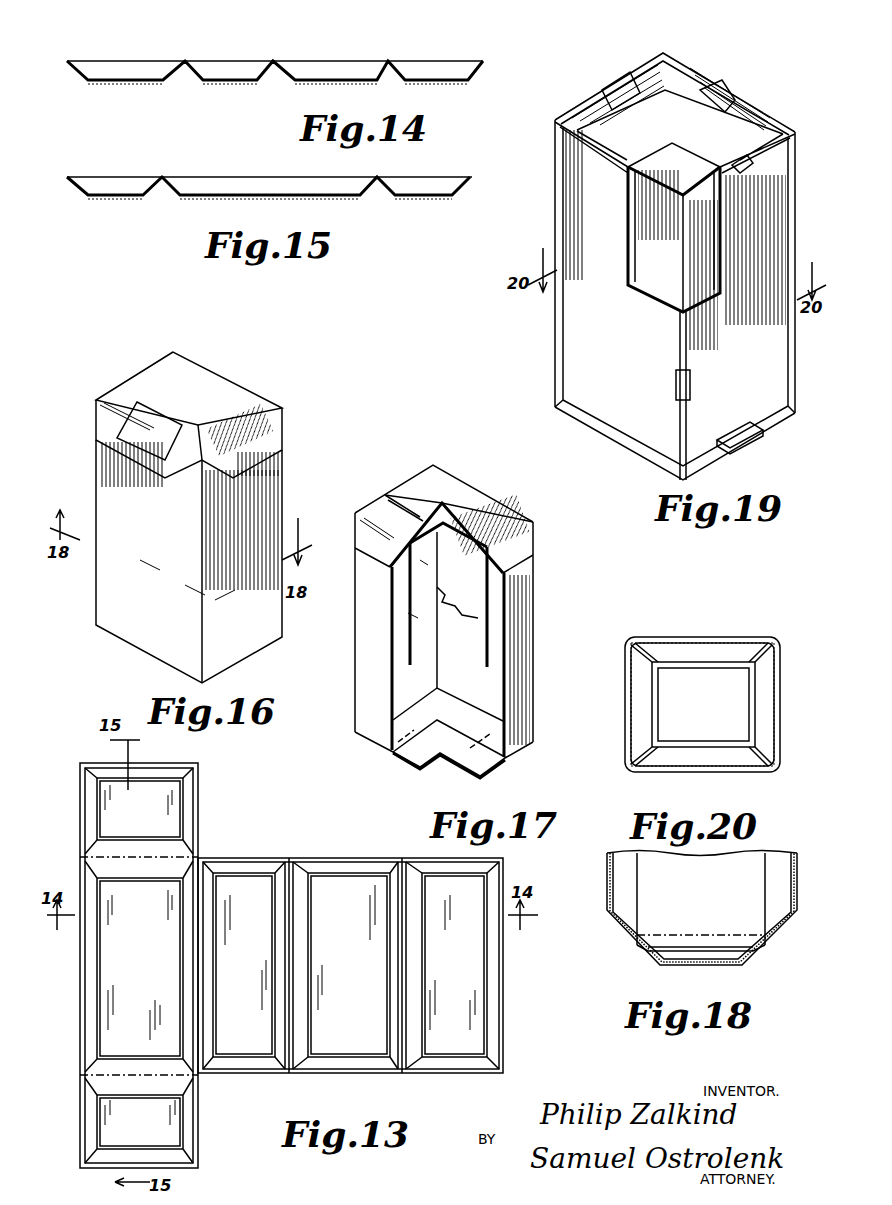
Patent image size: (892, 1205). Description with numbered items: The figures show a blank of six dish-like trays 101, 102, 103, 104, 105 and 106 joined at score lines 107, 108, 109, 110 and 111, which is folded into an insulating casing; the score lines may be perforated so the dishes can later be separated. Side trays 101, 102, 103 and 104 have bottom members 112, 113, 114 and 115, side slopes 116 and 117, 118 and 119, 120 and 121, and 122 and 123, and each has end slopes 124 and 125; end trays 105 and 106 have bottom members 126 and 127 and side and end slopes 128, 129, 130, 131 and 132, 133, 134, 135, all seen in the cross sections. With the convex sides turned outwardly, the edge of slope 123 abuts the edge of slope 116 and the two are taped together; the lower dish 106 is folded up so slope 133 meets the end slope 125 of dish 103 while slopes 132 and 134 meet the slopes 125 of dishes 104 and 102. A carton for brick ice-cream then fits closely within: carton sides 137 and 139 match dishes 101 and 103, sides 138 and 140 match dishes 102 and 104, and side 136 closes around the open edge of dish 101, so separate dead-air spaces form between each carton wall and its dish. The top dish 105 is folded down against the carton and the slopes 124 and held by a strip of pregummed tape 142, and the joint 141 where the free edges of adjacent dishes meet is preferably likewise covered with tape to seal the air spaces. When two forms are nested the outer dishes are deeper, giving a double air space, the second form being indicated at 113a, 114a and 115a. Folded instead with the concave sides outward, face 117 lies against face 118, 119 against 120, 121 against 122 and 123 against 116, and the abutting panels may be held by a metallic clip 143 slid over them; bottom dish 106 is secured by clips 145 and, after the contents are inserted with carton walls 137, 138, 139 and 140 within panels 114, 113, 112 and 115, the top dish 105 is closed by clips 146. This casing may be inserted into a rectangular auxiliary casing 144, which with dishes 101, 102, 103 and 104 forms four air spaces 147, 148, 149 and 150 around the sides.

In FIG. 14, the dish 101 is at (130, 52).
In FIG. 15, the dish 101 is at (284, 167).
In FIG. 13, the dish 101 is at (84, 965).
In FIG. 14, the dish 102 is at (240, 52).
In FIG. 13, the dish 102 is at (234, 1073).
In FIG. 14, the dish 103 is at (340, 52).
In FIG. 13, the dish 103 is at (330, 1073).
In FIG. 14, the dish 104 is at (448, 52).
In FIG. 13, the dish 104 is at (434, 1073).
In FIG. 15, the top dish 105 is at (438, 167).
In FIG. 13, the top dish 105 is at (199, 808).
In FIG. 15, the bottom dish 106 is at (110, 177).
In FIG. 13, the bottom dish 106 is at (199, 1140).
In FIG. 14, the score line 107 is at (185, 61).
In FIG. 13, the score line 107 is at (202, 995).
In FIG. 14, the score line 108 is at (290, 50).
In FIG. 13, the score line 108 is at (289, 857).
In FIG. 14, the score line 109 is at (396, 50).
In FIG. 13, the score line 109 is at (403, 857).
In FIG. 15, the score line 110 is at (392, 165).
In FIG. 13, the score line 110 is at (81, 857).
In FIG. 15, the score line 111 is at (178, 165).
In FIG. 13, the score line 111 is at (81, 1078).
In FIG. 14, the bottom member 112 is at (125, 84).
In FIG. 15, the bottom member 112 is at (292, 199).
In FIG. 19, the bottom member 112 is at (650, 290).
In FIG. 17, the bottom member 112 is at (453, 644).
In FIG. 20, the bottom member 112 is at (708, 750).
In FIG. 13, the bottom member 112 is at (143, 973).
In FIG. 14, the bottom member 113 is at (235, 84).
In FIG. 17, the bottom member 113 is at (428, 627).
In FIG. 20, the bottom member 113 is at (640, 703).
In FIG. 18, the bottom member 113 is at (612, 870).
In FIG. 13, the bottom member 113 is at (239, 966).
In FIG. 18, the inclined wall portion 113a is at (622, 912).
In FIG. 14, the bottom member 114 is at (335, 84).
In FIG. 16, the bottom member 114 is at (105, 490).
In FIG. 17, the bottom member 114 is at (372, 610).
In FIG. 20, the bottom member 114 is at (696, 667).
In FIG. 13, the bottom member 114 is at (349, 974).
In FIG. 18, the inclined wall portion 114a is at (690, 950).
In FIG. 14, the bottom member 115 is at (452, 90).
In FIG. 19, the bottom member 115 is at (686, 355).
In FIG. 16, the bottom member 115 is at (258, 483).
In FIG. 17, the bottom member 115 is at (518, 622).
In FIG. 20, the bottom member 115 is at (760, 695).
In FIG. 13, the bottom member 115 is at (443, 966).
In FIG. 18, the inclined wall portion 115a is at (790, 865).
In FIG. 14, the side slope 116 is at (80, 74).
In FIG. 19, the side slope 116 is at (680, 325).
In FIG. 20, the side slope 116 is at (758, 772).
In FIG. 18, the side slope 116 is at (796, 875).
In FIG. 13, the side slope 116 is at (90, 940).
In FIG. 14, the side slope 117 is at (175, 82).
In FIG. 19, the side slope 117 is at (568, 205).
In FIG. 20, the side slope 117 is at (642, 765).
In FIG. 13, the side slope 117 is at (178, 932).
In FIG. 14, the side slope 118 is at (196, 72).
In FIG. 20, the side slope 118 is at (636, 752).
In FIG. 13, the side slope 118 is at (208, 1022).
In FIG. 14, the side slope 119 is at (272, 72).
In FIG. 20, the side slope 119 is at (635, 655).
In FIG. 13, the side slope 119 is at (275, 893).
In FIG. 14, the side slope 120 is at (288, 75).
In FIG. 20, the side slope 120 is at (648, 645).
In FIG. 13, the side slope 120 is at (306, 937).
In FIG. 14, the side slope 121 is at (382, 75).
In FIG. 16, the side slope 121 is at (170, 640).
In FIG. 20, the side slope 121 is at (755, 642).
In FIG. 13, the side slope 121 is at (392, 1020).
In FIG. 14, the side slope 122 is at (404, 77).
In FIG. 19, the side slope 122 is at (780, 248).
In FIG. 16, the side slope 122 is at (230, 655).
In FIG. 20, the side slope 122 is at (760, 650).
In FIG. 13, the side slope 122 is at (443, 894).
In FIG. 14, the side slope 123 is at (480, 65).
In FIG. 19, the side slope 123 is at (686, 330).
In FIG. 20, the side slope 123 is at (765, 752).
In FIG. 13, the side slope 123 is at (488, 997).
In FIG. 15, the end slope 124 is at (372, 190).
In FIG. 19, the end slope 124 is at (625, 170).
In FIG. 16, the end slope 124 is at (105, 418).
In FIG. 17, the end slope 124 is at (370, 530).
In FIG. 13, the end slope 124 is at (146, 860).
In FIG. 15, the end slope 125 is at (172, 190).
In FIG. 19, the end slope 125 is at (618, 425).
In FIG. 17, the end slope 125 is at (420, 703).
In FIG. 13, the end slope 125 is at (135, 1065).
In FIG. 15, the bottom member 126 is at (435, 199).
In FIG. 19, the bottom member 126 is at (673, 119).
In FIG. 16, the bottom member 126 is at (191, 389).
In FIG. 17, the bottom member 126 is at (438, 489).
In FIG. 13, the bottom member 126 is at (143, 798).
In FIG. 15, the bottom member 127 is at (115, 199).
In FIG. 17, the bottom member 127 is at (443, 743).
In FIG. 13, the bottom member 127 is at (141, 1119).
In FIG. 19, the side and end slope 128 is at (752, 138).
In FIG. 16, the side and end slope 128 is at (250, 405).
In FIG. 17, the side and end slope 128 is at (520, 520).
In FIG. 13, the side and end slope 128 is at (88, 792).
In FIG. 15, the side and end slope 129 is at (470, 180).
In FIG. 19, the side and end slope 129 is at (748, 122).
In FIG. 16, the side and end slope 129 is at (115, 395).
In FIG. 17, the side and end slope 129 is at (380, 483).
In FIG. 13, the side and end slope 129 is at (150, 775).
In FIG. 19, the side and end slope 130 is at (580, 105).
In FIG. 13, the side and end slope 130 is at (190, 780).
In FIG. 15, the side and end slope 131 is at (386, 190).
In FIG. 19, the side and end slope 131 is at (628, 160).
In FIG. 13, the side and end slope 131 is at (133, 850).
In FIG. 17, the side and end slope 132 is at (480, 778).
In FIG. 13, the side and end slope 132 is at (90, 1103).
In FIG. 15, the side and end slope 133 is at (80, 190).
In FIG. 17, the side and end slope 133 is at (415, 770).
In FIG. 13, the side and end slope 133 is at (105, 1160).
In FIG. 17, the side and end slope 134 is at (410, 722).
In FIG. 13, the side and end slope 134 is at (190, 1116).
In FIG. 17, the side and end slope 135 is at (470, 725).
In FIG. 13, the side and end slope 135 is at (165, 1084).
In FIG. 15, the carton side 136 is at (155, 192).
In FIG. 17, the carton side 137 is at (462, 580).
In FIG. 20, the carton side 137 is at (695, 689).
In FIG. 17, the carton side 138 is at (420, 565).
In FIG. 20, the carton side 138 is at (648, 715).
In FIG. 18, the carton side 138 is at (640, 875).
In FIG. 19, the carton side 139 is at (682, 238).
In FIG. 17, the carton side 139 is at (410, 580).
In FIG. 20, the carton side 139 is at (696, 734).
In FIG. 18, the carton side 139 is at (680, 933).
In FIG. 19, the carton side 140 is at (701, 231).
In FIG. 17, the carton side 140 is at (490, 648).
In FIG. 20, the carton side 140 is at (755, 690).
In FIG. 18, the carton side 140 is at (762, 870).
In FIG. 19, the ridge 141 is at (675, 171).
In FIG. 17, the ridge 141 is at (455, 515).
In FIG. 16, the strip of pregummed tape 142 is at (145, 427).
In FIG. 19, the metallic clip 143 is at (690, 385).
In FIG. 20, the auxiliary casing 144 is at (704, 770).
In FIG. 18, the auxiliary casing 144 is at (735, 965).
In FIG. 19, the metallic clip 145 is at (752, 442).
In FIG. 19, the clip 146 is at (618, 78).
In FIG. 20, the air space 147 is at (742, 770).
In FIG. 20, the air space 148 is at (762, 717).
In FIG. 20, the air space 149 is at (690, 637).
In FIG. 20, the air space 150 is at (640, 675).